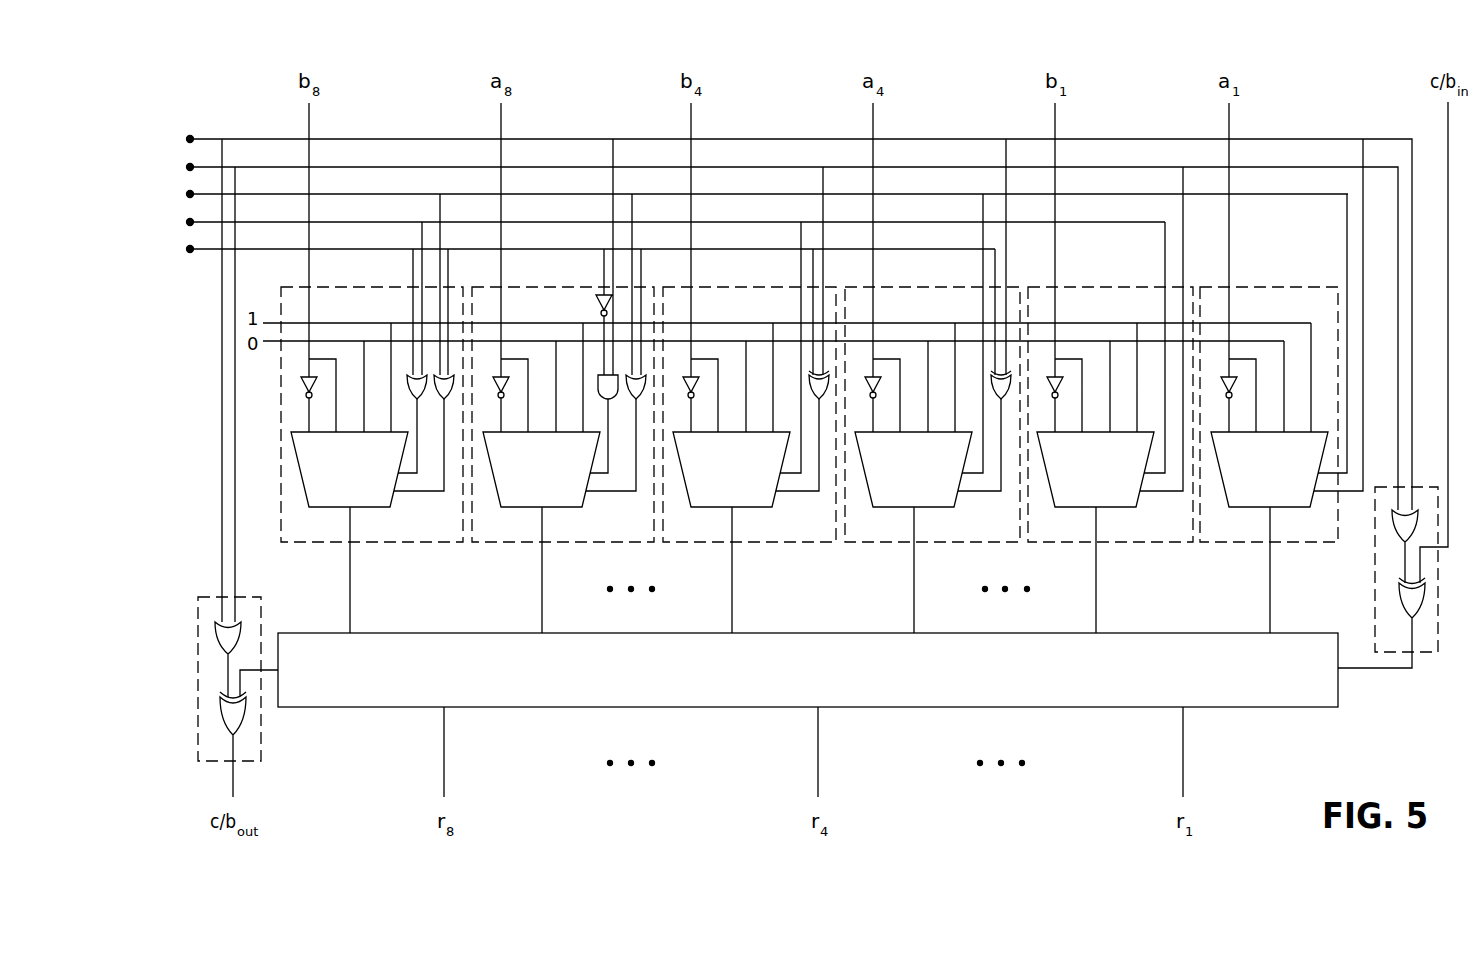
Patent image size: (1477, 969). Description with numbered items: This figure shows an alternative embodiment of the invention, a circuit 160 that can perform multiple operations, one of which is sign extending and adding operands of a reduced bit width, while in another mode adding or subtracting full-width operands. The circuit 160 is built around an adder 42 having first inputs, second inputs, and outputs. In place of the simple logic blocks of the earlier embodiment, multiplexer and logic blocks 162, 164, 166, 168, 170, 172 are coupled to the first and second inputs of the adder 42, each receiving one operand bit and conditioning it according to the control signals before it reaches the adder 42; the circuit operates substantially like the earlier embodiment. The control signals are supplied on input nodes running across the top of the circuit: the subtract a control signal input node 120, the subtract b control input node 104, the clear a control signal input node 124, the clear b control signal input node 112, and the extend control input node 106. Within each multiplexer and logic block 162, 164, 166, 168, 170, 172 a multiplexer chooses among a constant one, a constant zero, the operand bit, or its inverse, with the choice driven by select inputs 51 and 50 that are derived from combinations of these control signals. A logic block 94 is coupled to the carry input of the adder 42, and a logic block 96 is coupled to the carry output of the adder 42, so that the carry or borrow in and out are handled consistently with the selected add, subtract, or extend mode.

The arithmetic logic circuit 160 is at (226, 92).
The subtract a control signal input node 120 is at (197, 139).
The subtract b control input node 104 is at (197, 167).
The clear a control signal input node 124 is at (197, 194).
The clear b control signal input node 112 is at (197, 222).
The extend control input node 106 is at (197, 249).
The multiplexer and logic block 162 is at (455, 529).
The multiplexer and logic block 164 is at (646, 529).
The multiplexer and logic block 166 is at (829, 529).
The multiplexer and logic block 168 is at (1012, 529).
The multiplexer and logic block 170 is at (1184, 529).
The multiplexer and logic block 172 is at (1329, 529).
The multiplexer select input 51 is at (399, 428).
The multiplexer select input 50 is at (410, 438).
The logic block 94 is at (1405, 631).
The logic block 96 is at (227, 747).
The adder 42 is at (851, 681).